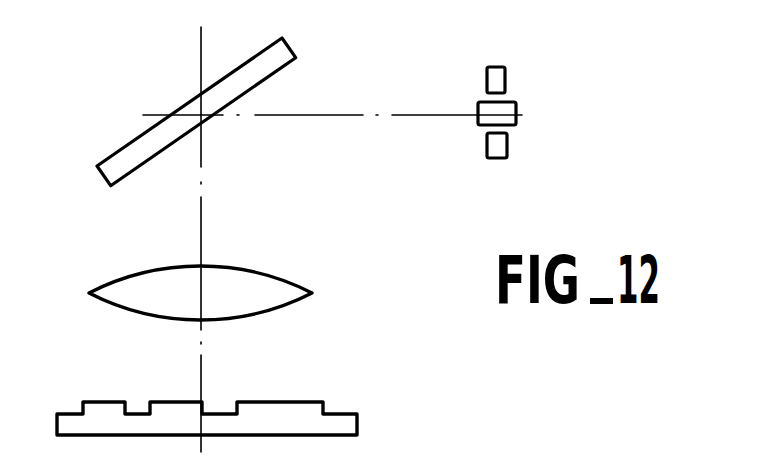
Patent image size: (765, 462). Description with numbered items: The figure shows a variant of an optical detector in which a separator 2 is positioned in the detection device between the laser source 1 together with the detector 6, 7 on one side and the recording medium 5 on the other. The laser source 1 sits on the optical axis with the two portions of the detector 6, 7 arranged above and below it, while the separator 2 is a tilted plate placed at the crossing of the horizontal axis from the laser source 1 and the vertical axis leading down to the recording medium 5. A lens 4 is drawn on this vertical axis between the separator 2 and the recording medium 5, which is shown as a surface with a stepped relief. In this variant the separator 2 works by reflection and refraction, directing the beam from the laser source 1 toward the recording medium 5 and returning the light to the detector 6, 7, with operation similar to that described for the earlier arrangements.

The laser source 1 is at (516, 115).
The separator 2 is at (117, 158).
The lens 4 is at (277, 277).
The recording medium 5 is at (103, 417).
The detector 6 is at (505, 81).
The detector 7 is at (505, 147).